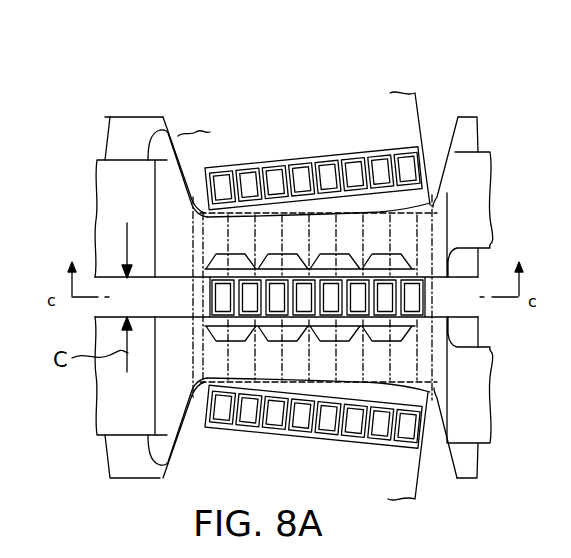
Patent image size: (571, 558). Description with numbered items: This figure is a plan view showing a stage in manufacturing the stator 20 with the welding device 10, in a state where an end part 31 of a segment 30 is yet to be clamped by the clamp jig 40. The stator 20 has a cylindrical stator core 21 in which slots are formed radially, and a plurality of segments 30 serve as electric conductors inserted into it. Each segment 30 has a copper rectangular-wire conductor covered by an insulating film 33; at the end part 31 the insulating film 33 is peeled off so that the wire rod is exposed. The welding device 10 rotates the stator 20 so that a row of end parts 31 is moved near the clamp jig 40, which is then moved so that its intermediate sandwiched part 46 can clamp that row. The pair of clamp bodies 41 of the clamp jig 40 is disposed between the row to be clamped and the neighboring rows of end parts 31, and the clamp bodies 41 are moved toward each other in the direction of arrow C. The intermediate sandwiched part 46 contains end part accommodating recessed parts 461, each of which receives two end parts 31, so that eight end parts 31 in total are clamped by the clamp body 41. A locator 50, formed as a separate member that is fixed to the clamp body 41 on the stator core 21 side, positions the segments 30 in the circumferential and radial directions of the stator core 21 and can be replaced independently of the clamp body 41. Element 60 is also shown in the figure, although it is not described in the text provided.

The welding device 10 is at (92, 104).
The clamp jig 40 is at (129, 126).
The clamp body 41 is at (167, 130).
The end part accommodating recessed part 461 is at (216, 259).
The intermediate sandwiched part 46 is at (356, 217).
The insulating film 33 is at (296, 183).
The end part 31 is at (243, 183).
The stator 20 is at (430, 79).
The stator core 21 is at (410, 112).
The segment 30 is at (440, 170).
The locator 50 is at (442, 233).
The shaft 60 is at (488, 555).